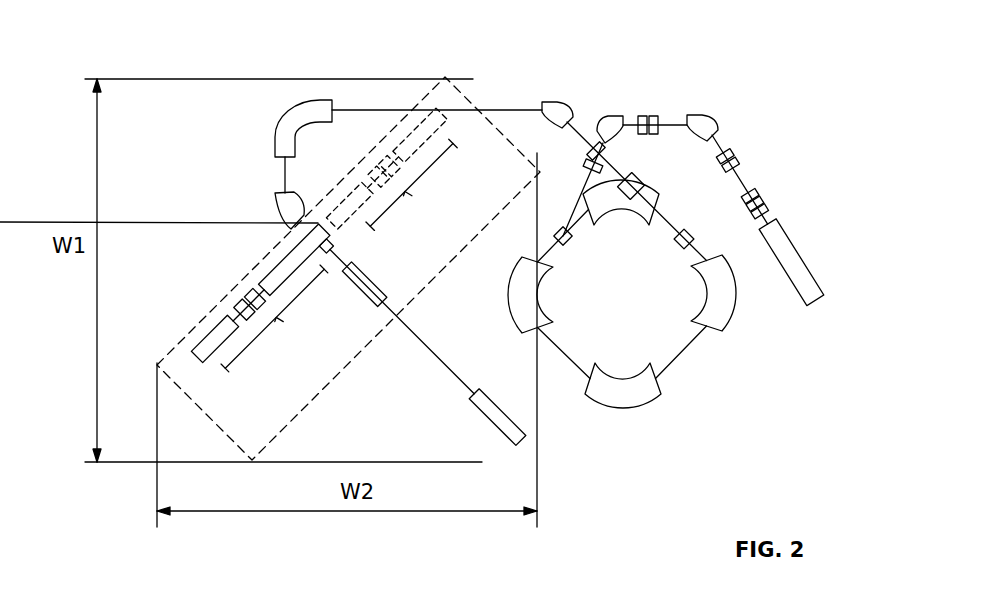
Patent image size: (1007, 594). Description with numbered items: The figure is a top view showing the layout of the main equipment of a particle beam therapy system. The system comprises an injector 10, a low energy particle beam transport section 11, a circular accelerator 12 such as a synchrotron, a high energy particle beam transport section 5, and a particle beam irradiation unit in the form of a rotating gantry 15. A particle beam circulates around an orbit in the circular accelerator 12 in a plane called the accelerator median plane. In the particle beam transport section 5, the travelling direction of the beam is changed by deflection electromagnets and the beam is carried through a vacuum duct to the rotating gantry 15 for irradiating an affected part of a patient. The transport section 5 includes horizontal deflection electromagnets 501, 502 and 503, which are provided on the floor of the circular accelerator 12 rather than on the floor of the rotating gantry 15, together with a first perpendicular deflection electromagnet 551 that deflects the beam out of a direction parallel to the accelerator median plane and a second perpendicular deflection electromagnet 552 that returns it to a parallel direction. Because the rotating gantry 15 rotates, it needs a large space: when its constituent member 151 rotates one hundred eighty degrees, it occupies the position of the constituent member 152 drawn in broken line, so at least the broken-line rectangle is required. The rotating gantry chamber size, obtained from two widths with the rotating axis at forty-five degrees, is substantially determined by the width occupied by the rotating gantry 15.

The high energy particle beam transport section 5 is at (428, 33).
The injector 10 is at (797, 252).
The low energy particle beam transport section 11 is at (681, 100).
The circular accelerator 12 is at (632, 293).
The rotating gantry 15 is at (304, 245).
The constituent member 151 is at (270, 302).
The constituent member 152 is at (397, 178).
The horizontal deflection electromagnet 501 is at (562, 105).
The horizontal deflection electromagnet 502 is at (303, 108).
The horizontal deflection electromagnet 503 is at (273, 210).
The first perpendicular deflection electromagnet 551 is at (462, 410).
The second perpendicular deflection electromagnet 552 is at (492, 398).